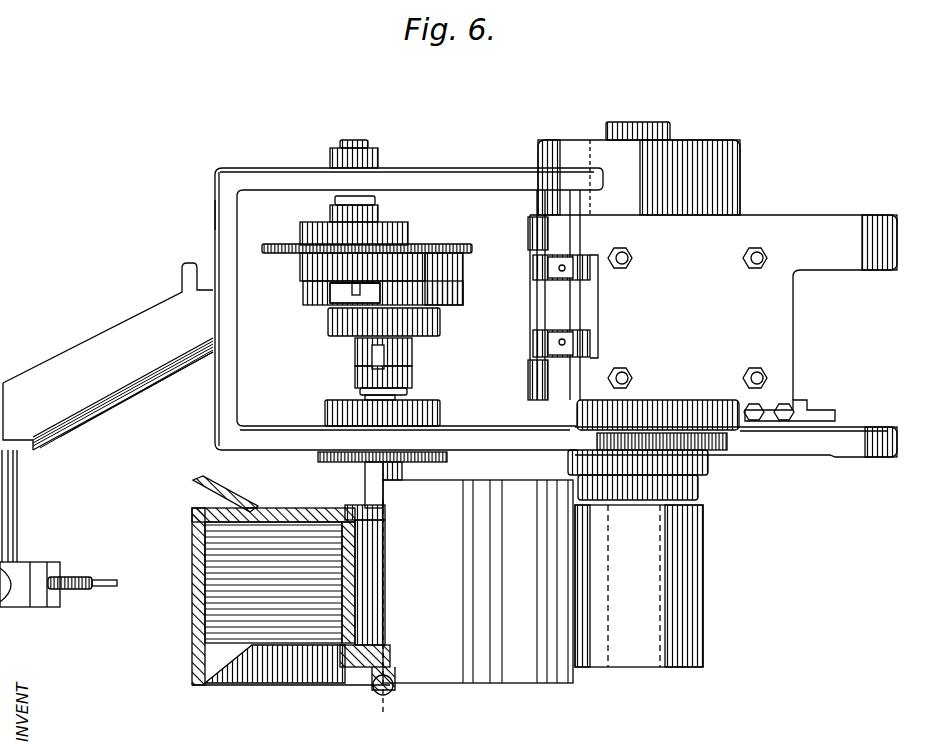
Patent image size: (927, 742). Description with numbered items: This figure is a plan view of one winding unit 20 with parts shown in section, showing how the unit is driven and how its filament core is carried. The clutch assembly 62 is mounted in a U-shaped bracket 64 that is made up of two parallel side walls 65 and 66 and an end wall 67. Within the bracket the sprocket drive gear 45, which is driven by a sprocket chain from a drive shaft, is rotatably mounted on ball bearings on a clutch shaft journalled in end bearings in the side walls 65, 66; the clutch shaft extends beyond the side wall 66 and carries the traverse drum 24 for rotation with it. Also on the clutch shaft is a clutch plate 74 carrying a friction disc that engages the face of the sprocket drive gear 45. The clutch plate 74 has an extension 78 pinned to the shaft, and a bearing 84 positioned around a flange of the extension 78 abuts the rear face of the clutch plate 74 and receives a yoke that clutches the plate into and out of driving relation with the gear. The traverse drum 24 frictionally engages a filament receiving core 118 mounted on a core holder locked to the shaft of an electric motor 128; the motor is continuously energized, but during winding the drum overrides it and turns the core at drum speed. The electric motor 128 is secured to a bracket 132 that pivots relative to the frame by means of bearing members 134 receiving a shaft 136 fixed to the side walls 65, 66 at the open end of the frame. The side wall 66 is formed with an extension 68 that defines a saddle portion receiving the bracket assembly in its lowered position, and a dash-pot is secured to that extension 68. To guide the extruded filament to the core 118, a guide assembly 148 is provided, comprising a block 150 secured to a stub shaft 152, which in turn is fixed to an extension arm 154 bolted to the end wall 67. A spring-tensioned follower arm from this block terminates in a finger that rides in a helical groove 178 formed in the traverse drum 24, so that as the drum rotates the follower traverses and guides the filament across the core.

The winding unit 20 is at (742, 512).
The traverse drum 24 is at (190, 636).
The sprocket drive gear 45 is at (288, 244).
The clutch assembly 62 is at (472, 296).
The U-shaped bracket 64 is at (266, 166).
The side wall 65 is at (487, 176).
The side wall 66 is at (482, 438).
The end wall 67 is at (222, 210).
The extension 68 is at (803, 445).
The clutch plate 74 is at (302, 305).
The extension 78 is at (396, 372).
The bearing 84 is at (440, 322).
The filament receiving core 118 is at (690, 626).
The electric motor 128 is at (717, 170).
The bracket 132 is at (828, 228).
The bearing members 134 is at (540, 237).
The shaft 136 is at (578, 302).
The guide assembly 148 is at (72, 566).
The block 150 is at (28, 600).
The stub shaft 152 is at (8, 490).
The extension arm 154 is at (130, 378).
The helical groove 178 is at (195, 493).